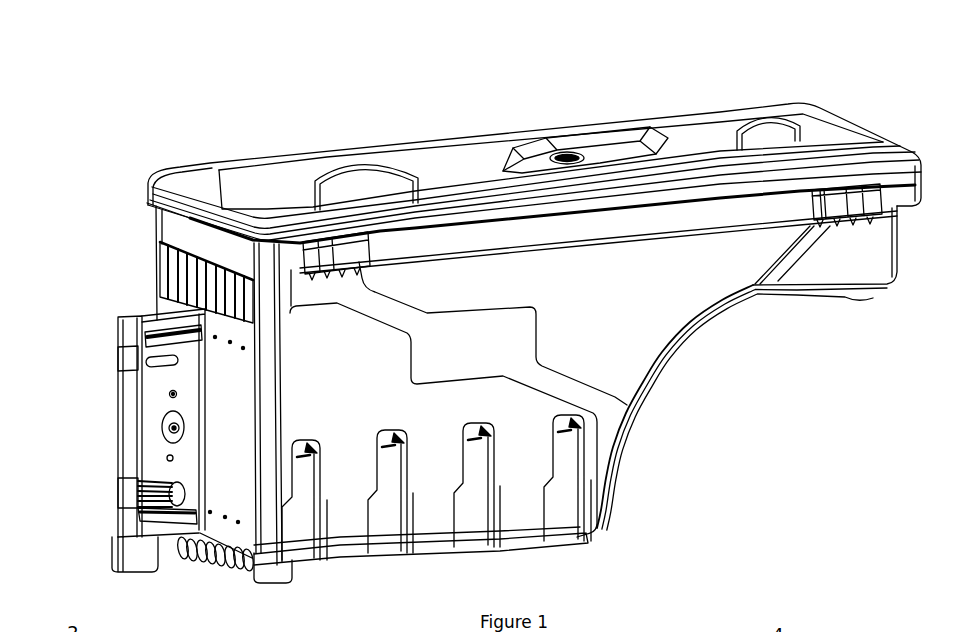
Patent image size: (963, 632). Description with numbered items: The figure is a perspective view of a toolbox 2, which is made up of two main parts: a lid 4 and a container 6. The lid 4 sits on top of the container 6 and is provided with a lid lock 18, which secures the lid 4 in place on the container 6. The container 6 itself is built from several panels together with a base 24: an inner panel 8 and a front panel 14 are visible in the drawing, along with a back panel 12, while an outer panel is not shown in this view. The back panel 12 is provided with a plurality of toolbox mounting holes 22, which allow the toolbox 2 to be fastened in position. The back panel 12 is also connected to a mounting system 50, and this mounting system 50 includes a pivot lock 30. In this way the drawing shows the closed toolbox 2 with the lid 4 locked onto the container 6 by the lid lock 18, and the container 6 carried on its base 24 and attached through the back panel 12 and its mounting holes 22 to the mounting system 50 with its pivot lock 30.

The toolbox 2 is at (470, 318).
The lid 4 is at (534, 152).
The container 6 is at (483, 404).
The inner panel 8 is at (643, 281).
The back panel 12 is at (193, 288).
The front panel 14 is at (743, 313).
The lid lock 18 is at (563, 152).
The toolbox mounting holes 22 is at (215, 338).
The base 24 is at (540, 555).
The pivot lock 30 is at (163, 510).
The mounting system 50 is at (133, 470).